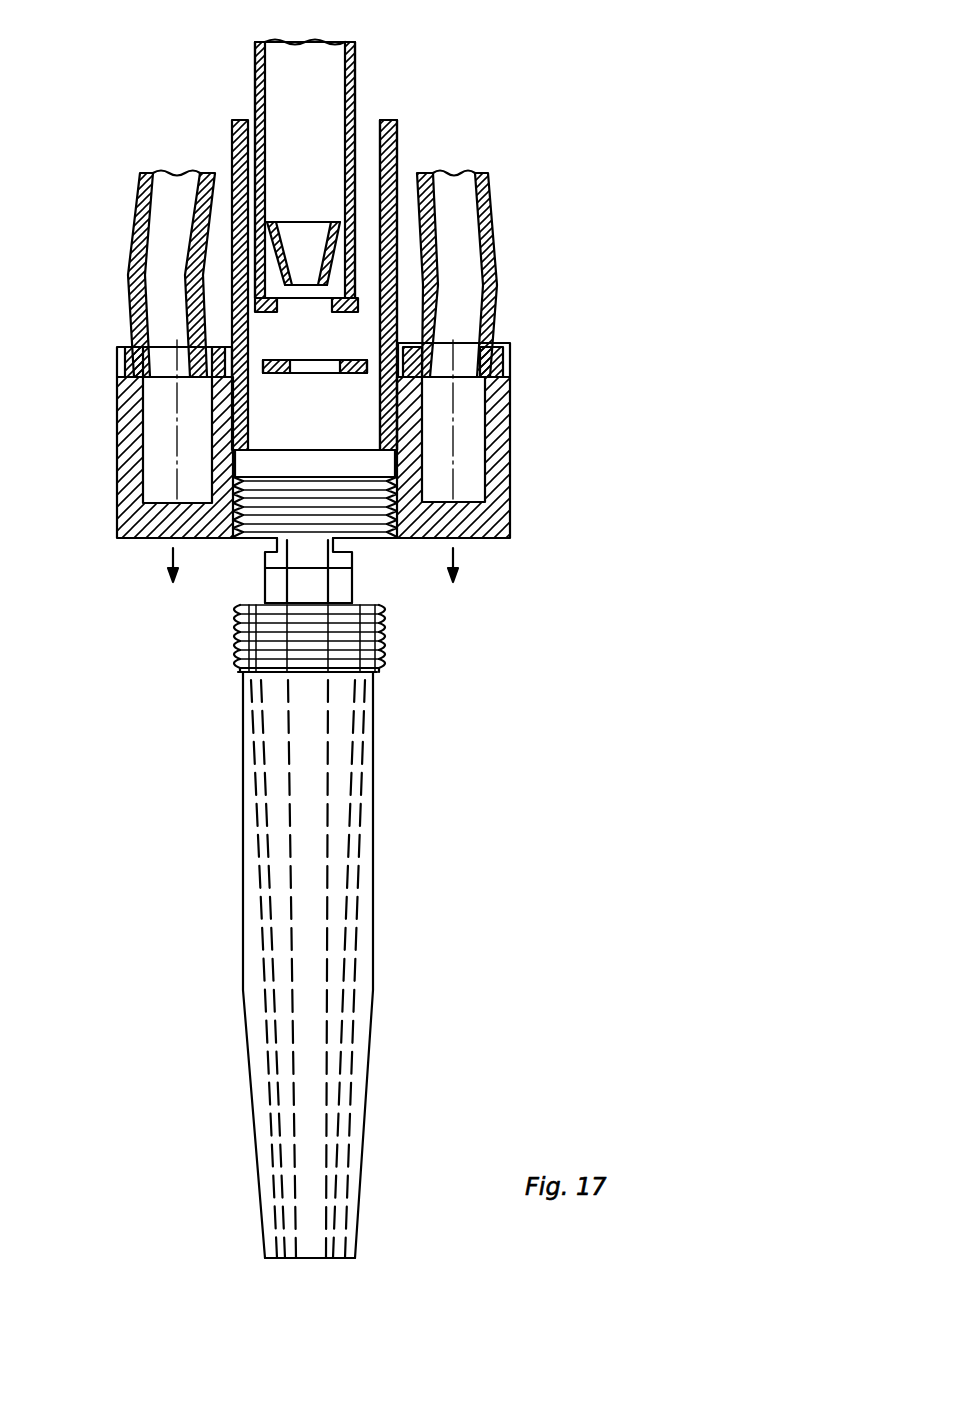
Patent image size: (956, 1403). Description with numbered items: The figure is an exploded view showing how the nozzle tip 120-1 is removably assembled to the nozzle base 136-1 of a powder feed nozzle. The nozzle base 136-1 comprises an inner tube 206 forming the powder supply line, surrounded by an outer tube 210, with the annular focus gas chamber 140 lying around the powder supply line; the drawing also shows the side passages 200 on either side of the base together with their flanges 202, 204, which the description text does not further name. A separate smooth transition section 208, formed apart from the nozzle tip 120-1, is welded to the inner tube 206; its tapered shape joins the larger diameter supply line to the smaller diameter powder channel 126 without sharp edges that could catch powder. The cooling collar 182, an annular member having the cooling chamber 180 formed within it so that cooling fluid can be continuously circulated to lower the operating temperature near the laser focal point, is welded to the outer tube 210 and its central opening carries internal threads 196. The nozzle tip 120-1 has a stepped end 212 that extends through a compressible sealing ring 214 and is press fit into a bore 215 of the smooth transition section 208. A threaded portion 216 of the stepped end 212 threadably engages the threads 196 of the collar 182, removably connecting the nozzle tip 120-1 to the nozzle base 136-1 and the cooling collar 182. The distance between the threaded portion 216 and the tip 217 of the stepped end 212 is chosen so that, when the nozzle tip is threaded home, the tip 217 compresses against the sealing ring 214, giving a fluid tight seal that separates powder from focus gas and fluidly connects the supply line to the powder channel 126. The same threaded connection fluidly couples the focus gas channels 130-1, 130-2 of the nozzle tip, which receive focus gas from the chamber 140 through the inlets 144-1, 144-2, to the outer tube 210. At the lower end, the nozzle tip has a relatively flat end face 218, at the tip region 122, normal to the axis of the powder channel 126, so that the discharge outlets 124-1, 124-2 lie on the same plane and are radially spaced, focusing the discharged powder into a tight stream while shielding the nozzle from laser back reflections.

The nozzle base 136-1 is at (365, 77).
The annular focus gas chamber 140 is at (362, 137).
The inner tube 206 is at (242, 80).
The outer tube 210 is at (395, 167).
The supply tube 200 is at (138, 207).
The smooth transition section 208 is at (347, 264).
The right flange 202 is at (423, 322).
The bore 215 is at (283, 300).
The left flange 204 is at (120, 352).
The cooling chamber 180 is at (158, 448).
The cooling collar 182 is at (510, 417).
The compressible sealing ring 214 is at (312, 393).
The threads 196 is at (237, 503).
The tip 217 is at (313, 527).
The inlet 144-1 is at (245, 606).
The inlet 144-2 is at (385, 604).
The stepped end 212 is at (410, 625).
The threaded portion 216 is at (390, 650).
The nozzle tip 120-1 is at (380, 838).
The powder channel 126 is at (312, 937).
The channel 130-1 is at (272, 997).
The channel 130-2 is at (350, 1000).
The discharge outlet 124-1 is at (280, 1258).
The discharge outlet 124-2 is at (330, 1262).
The tip 122 is at (310, 1258).
The end face 218 is at (328, 1258).